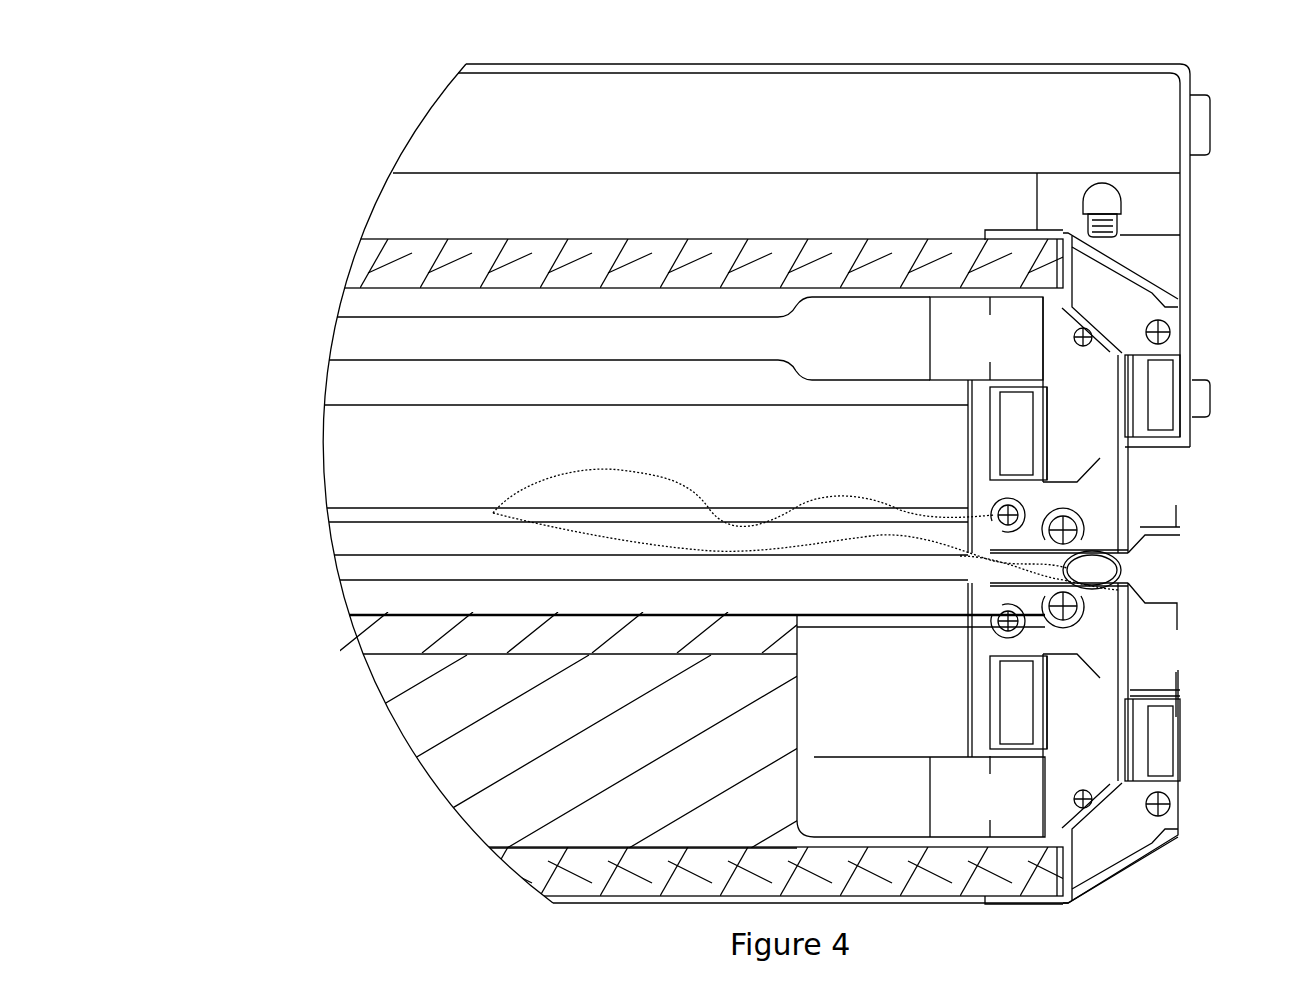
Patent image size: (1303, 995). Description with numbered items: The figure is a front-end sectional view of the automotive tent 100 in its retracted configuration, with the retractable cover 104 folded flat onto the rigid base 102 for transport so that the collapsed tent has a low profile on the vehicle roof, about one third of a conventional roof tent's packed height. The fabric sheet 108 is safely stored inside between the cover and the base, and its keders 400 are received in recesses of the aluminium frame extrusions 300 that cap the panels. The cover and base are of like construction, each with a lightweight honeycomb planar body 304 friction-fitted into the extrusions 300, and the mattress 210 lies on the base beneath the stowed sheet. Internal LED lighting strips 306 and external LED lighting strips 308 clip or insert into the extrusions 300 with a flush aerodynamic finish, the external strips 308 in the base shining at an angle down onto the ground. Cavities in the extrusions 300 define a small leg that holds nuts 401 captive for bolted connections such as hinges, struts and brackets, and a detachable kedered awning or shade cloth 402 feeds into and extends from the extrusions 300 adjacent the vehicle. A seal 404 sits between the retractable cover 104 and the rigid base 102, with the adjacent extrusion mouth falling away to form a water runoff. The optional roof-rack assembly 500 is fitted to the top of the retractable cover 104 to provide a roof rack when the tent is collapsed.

The automotive tent 100 is at (258, 103).
The roof-rack assembly 500 is at (468, 107).
The planar body 304 is at (372, 263).
The retractable cover 104 is at (312, 316).
The fabric sheet 108 is at (593, 465).
The mattress 210 is at (415, 707).
The rigid base 102 is at (375, 822).
The external LED lighting strip 308 is at (1113, 285).
The internal LED lighting strip 306 is at (1013, 440).
The nut 401 is at (1157, 393).
The kedered awning or shade cloth 402 is at (1158, 732).
The keder 400 is at (1000, 512).
The aluminium frame extrusion 300 is at (1165, 530).
The seal 404 is at (1120, 563).